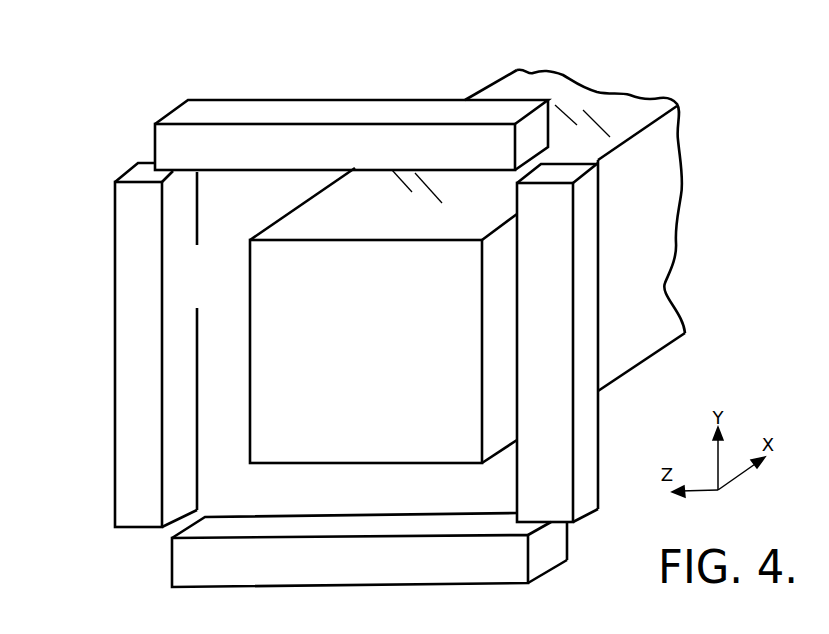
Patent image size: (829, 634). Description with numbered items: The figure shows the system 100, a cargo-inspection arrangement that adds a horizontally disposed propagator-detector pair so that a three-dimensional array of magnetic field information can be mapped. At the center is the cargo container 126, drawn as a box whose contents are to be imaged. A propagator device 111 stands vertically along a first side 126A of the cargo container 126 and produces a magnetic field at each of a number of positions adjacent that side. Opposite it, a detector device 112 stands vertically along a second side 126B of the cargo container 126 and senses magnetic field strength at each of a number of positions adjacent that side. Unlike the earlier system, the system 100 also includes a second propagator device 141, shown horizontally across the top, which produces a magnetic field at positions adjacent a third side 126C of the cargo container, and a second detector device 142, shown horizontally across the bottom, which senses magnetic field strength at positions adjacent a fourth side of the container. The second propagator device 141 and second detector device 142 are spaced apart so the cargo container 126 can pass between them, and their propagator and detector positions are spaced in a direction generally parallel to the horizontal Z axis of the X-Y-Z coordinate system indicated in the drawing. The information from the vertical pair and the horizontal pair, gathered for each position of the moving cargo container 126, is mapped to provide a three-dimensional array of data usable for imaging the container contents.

The system 100 is at (70, 62).
The propagator device 111 is at (115, 357).
The detector device 112 is at (585, 267).
The cargo container 126 is at (687, 334).
The first side of the cargo container 126A is at (250, 308).
The second side of the cargo container 126B is at (497, 255).
The third side of the cargo container 126C is at (292, 222).
The second propagator device 141 is at (210, 102).
The second detector device 142 is at (450, 584).